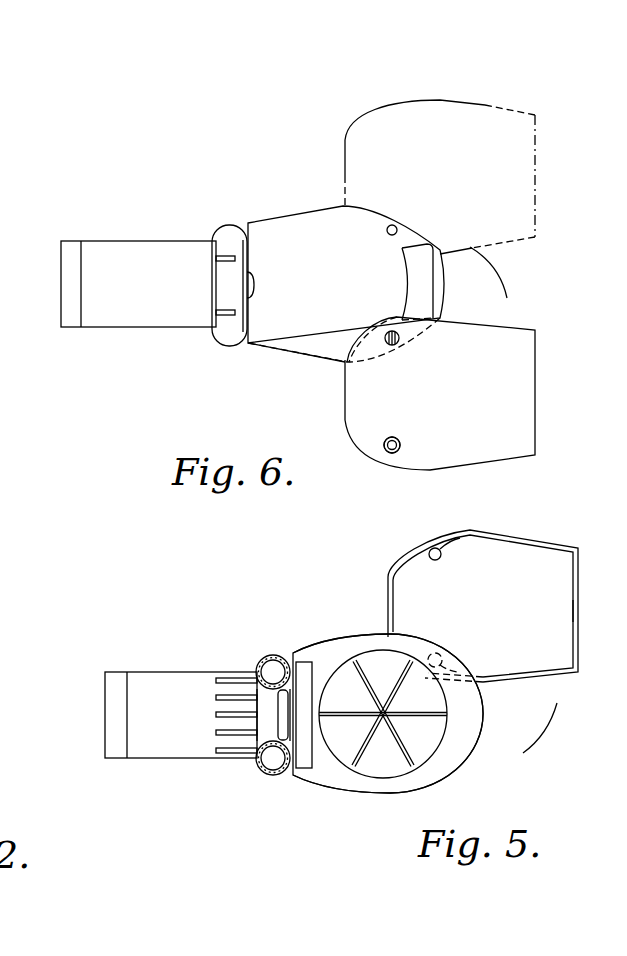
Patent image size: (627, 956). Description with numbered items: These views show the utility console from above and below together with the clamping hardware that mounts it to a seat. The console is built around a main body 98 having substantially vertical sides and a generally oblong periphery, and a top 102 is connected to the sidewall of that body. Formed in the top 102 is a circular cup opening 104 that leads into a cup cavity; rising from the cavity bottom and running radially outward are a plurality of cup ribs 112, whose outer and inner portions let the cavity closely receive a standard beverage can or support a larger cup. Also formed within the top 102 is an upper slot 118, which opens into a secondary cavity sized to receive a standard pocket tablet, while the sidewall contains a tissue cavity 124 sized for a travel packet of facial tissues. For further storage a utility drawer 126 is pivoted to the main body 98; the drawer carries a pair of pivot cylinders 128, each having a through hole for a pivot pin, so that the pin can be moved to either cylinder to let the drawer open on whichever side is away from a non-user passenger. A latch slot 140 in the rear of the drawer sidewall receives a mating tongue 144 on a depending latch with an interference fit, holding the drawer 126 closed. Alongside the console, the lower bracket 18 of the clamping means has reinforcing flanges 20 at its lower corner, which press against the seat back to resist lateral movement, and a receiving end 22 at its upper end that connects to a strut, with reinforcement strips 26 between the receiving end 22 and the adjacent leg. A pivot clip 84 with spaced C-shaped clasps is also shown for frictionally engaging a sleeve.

In FIG. 6, the lower bracket 18 is at (158, 328).
In FIG. 5, the lower bracket 18 is at (140, 753).
In FIG. 5, the reinforcing flanges 20 is at (216, 732).
In FIG. 6, the receiving end 22 is at (230, 335).
In FIG. 6, the reinforcement strips 26 is at (232, 254).
In FIG. 5, the pivot clip 84 is at (278, 653).
In FIG. 6, the main body 98 is at (320, 205).
In FIG. 5, the top 102 is at (457, 752).
In FIG. 5, the circular cup opening 104 is at (447, 702).
In FIG. 5, the cup ribs 112 is at (370, 745).
In FIG. 5, the upper slot 118 is at (316, 660).
In FIG. 6, the tissue cavity 124 is at (403, 292).
In FIG. 6, the utility drawer 126 is at (487, 105).
In FIG. 5, the utility drawer 126 is at (528, 533).
In FIG. 6, the pivot cylinders 128 is at (402, 453).
In FIG. 5, the pivot cylinders 128 is at (466, 531).
In FIG. 5, the latch slot 140 is at (575, 608).
In FIG. 6, the mating tongue 144 is at (255, 282).